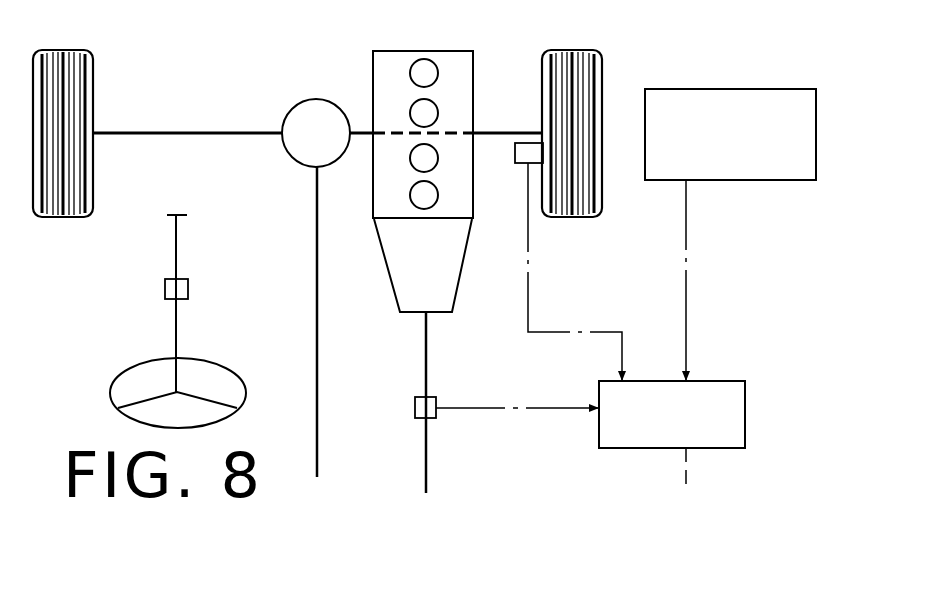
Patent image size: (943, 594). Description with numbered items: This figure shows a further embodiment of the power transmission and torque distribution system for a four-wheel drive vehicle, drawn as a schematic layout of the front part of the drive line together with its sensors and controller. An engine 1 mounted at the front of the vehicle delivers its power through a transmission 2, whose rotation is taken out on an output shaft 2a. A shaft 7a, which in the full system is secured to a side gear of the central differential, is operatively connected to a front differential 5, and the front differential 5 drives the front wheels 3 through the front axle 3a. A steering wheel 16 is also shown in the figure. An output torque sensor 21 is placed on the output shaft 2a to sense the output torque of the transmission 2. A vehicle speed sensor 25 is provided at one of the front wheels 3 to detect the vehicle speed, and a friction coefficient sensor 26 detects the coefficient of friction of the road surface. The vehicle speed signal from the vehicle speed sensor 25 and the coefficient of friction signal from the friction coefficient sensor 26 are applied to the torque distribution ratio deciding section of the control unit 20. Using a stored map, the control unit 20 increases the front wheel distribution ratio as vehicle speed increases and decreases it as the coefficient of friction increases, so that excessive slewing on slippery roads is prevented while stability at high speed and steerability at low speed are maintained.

The engine 1 is at (465, 51).
The transmission 2 is at (462, 296).
The output shaft 2a is at (432, 484).
The front wheels 3 is at (90, 64).
The front axle 3a is at (190, 108).
The front differential 5 is at (305, 100).
The shaft 7a is at (320, 391).
The steering wheel 16 is at (122, 378).
The control unit 20 is at (757, 362).
The output torque sensor 21 is at (436, 402).
The vehicle speed sensor 25 is at (515, 153).
The friction coefficient sensor 26 is at (786, 62).